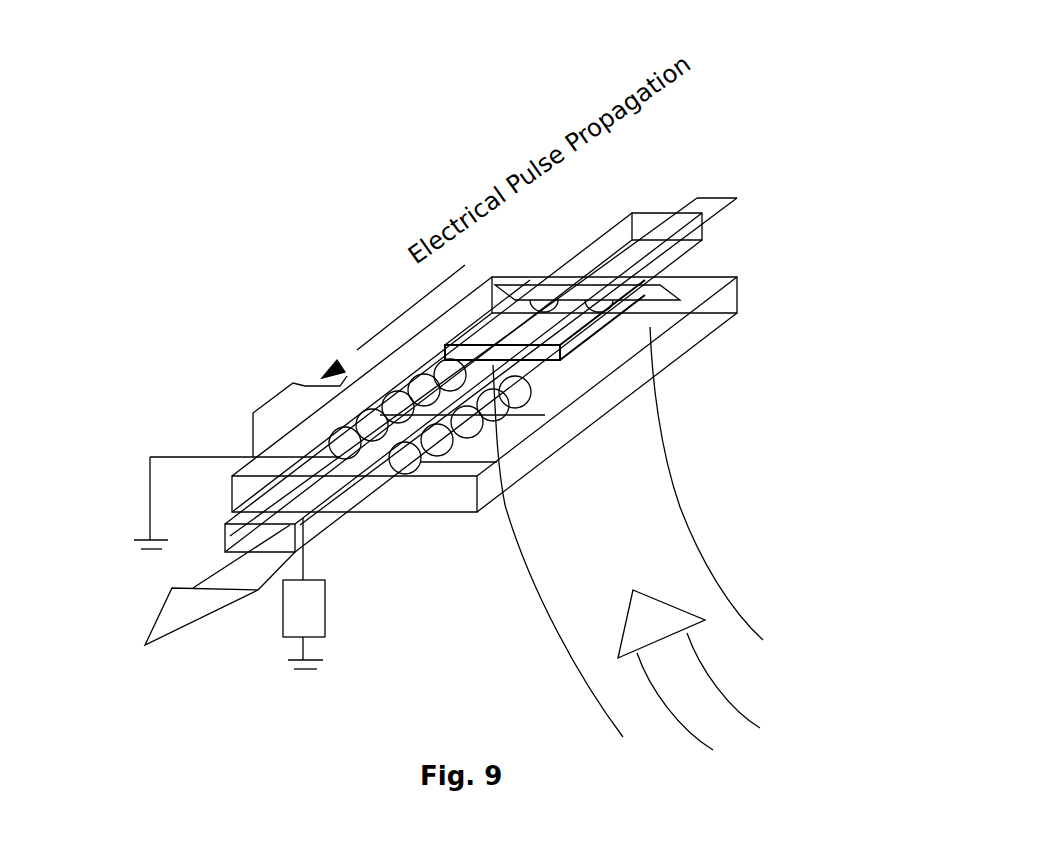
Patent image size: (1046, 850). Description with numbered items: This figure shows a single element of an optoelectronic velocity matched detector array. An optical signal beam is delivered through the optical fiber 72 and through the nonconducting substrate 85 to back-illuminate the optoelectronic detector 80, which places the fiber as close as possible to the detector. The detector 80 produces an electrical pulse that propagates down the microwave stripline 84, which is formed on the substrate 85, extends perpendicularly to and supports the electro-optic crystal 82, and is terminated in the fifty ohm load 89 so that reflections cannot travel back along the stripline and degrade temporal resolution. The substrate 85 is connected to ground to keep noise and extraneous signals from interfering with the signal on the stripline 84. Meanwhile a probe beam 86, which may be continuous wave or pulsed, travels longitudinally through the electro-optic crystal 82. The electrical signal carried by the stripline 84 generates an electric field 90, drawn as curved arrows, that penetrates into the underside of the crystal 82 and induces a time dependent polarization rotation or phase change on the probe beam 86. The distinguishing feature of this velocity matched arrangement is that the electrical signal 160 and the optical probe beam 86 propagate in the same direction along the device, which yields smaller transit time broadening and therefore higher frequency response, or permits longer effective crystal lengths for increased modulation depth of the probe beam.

The optical fiber 72 is at (680, 507).
The optoelectronic detector 80 is at (487, 338).
The electro-optic crystal 82 is at (592, 243).
The microwave stripline 84 is at (350, 428).
The nonconducting substrate 85 is at (415, 513).
The probe beam 86 is at (158, 613).
The 50 ohm load 89 is at (327, 608).
The electric field 90 is at (400, 390).
The electrical signal 160 is at (423, 295).